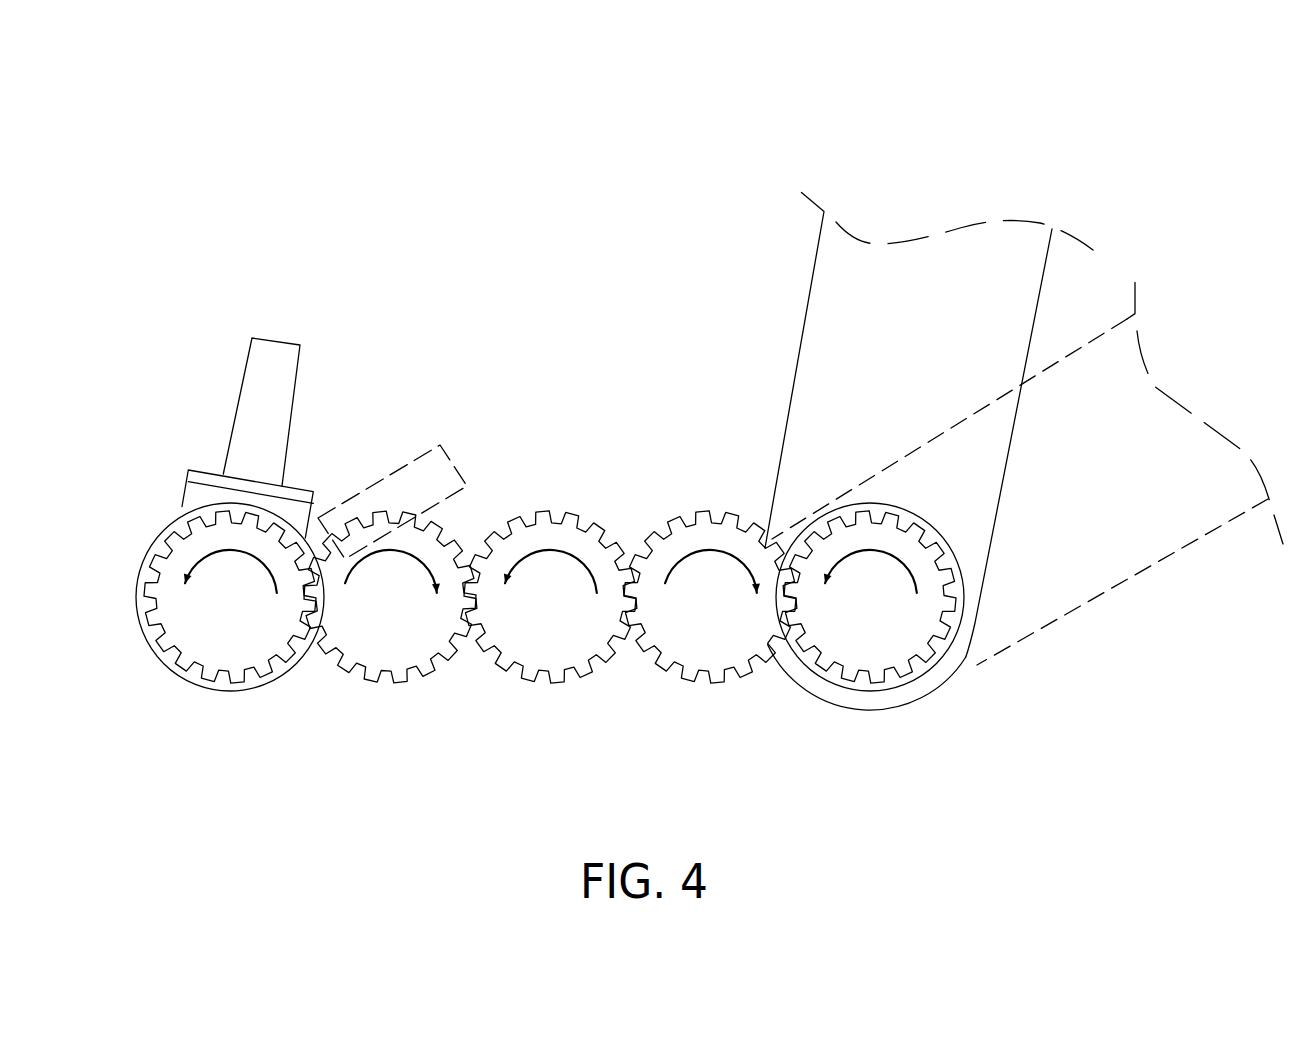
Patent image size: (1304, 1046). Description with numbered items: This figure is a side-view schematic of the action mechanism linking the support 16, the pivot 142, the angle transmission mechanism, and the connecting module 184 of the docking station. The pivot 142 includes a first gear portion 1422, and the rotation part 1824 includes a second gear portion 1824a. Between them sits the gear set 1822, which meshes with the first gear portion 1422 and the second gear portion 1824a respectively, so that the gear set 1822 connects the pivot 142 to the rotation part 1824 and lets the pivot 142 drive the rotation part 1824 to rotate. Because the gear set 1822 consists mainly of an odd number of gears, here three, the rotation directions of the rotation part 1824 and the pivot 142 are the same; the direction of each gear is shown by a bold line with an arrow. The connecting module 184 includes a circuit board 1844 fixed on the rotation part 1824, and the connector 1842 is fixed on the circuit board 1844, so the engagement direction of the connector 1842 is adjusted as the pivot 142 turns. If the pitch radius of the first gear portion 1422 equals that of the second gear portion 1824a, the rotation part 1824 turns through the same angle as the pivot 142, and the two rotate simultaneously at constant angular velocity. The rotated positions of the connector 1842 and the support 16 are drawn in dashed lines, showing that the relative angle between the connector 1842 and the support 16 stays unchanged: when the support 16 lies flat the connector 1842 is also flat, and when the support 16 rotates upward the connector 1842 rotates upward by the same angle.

The support 16 is at (977, 510).
The pivot 142 is at (945, 643).
The first gear portion 1422 is at (873, 653).
The connecting module 184 is at (243, 448).
The connector 1842 is at (250, 395).
The circuit board 1844 is at (205, 477).
The rotation part 1824 is at (168, 658).
The second gear portion 1824a is at (217, 650).
The gear set 1822 is at (783, 708).